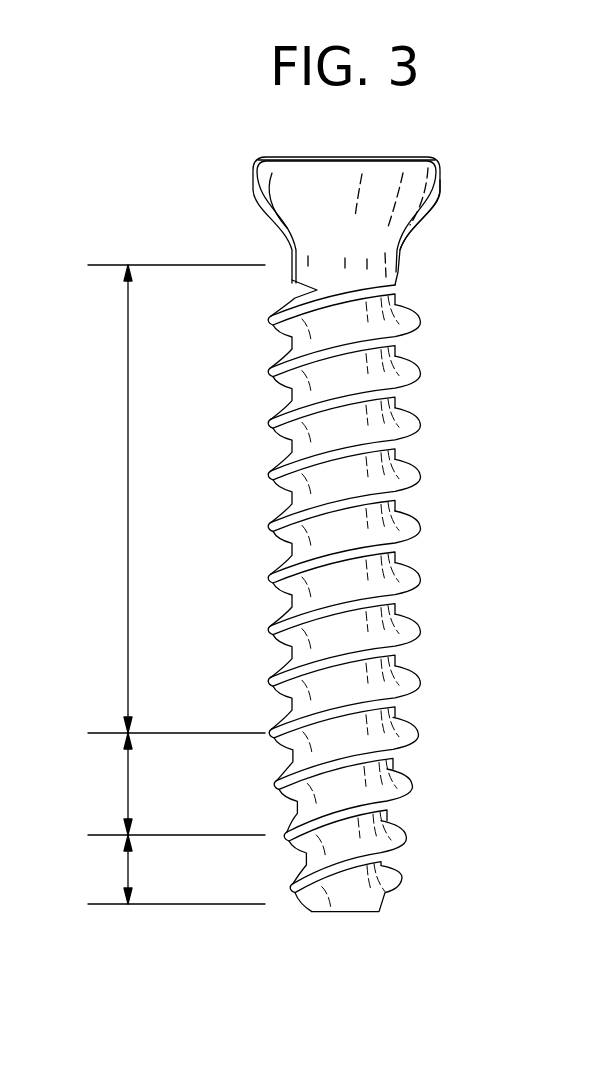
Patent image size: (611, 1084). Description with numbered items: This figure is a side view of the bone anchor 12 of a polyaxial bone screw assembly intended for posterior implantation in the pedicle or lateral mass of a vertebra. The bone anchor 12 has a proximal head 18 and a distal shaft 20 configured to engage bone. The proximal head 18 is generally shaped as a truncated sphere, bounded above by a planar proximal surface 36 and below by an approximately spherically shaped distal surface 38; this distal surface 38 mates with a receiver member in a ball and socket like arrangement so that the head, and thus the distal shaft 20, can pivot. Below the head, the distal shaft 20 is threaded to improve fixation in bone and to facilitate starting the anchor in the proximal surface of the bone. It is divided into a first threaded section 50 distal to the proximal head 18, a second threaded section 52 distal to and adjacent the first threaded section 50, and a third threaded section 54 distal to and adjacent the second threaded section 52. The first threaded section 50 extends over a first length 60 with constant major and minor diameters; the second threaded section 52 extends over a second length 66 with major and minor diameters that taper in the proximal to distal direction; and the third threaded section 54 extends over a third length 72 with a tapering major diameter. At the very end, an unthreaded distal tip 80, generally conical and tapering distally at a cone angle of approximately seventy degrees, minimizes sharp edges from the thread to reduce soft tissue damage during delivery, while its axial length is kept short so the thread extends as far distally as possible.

The bone anchor 12 is at (327, 529).
The proximal head 18 is at (342, 199).
The distal shaft 20 is at (309, 612).
The planar proximal surface 36 is at (358, 157).
The distal surface 38 is at (439, 218).
The first threaded section 50 is at (234, 462).
The second threaded section 52 is at (231, 783).
The third threaded section 54 is at (305, 856).
The first length 60 is at (128, 478).
The second length 66 is at (128, 799).
The third length 72 is at (128, 868).
The unthreaded distal tip 80 is at (379, 909).